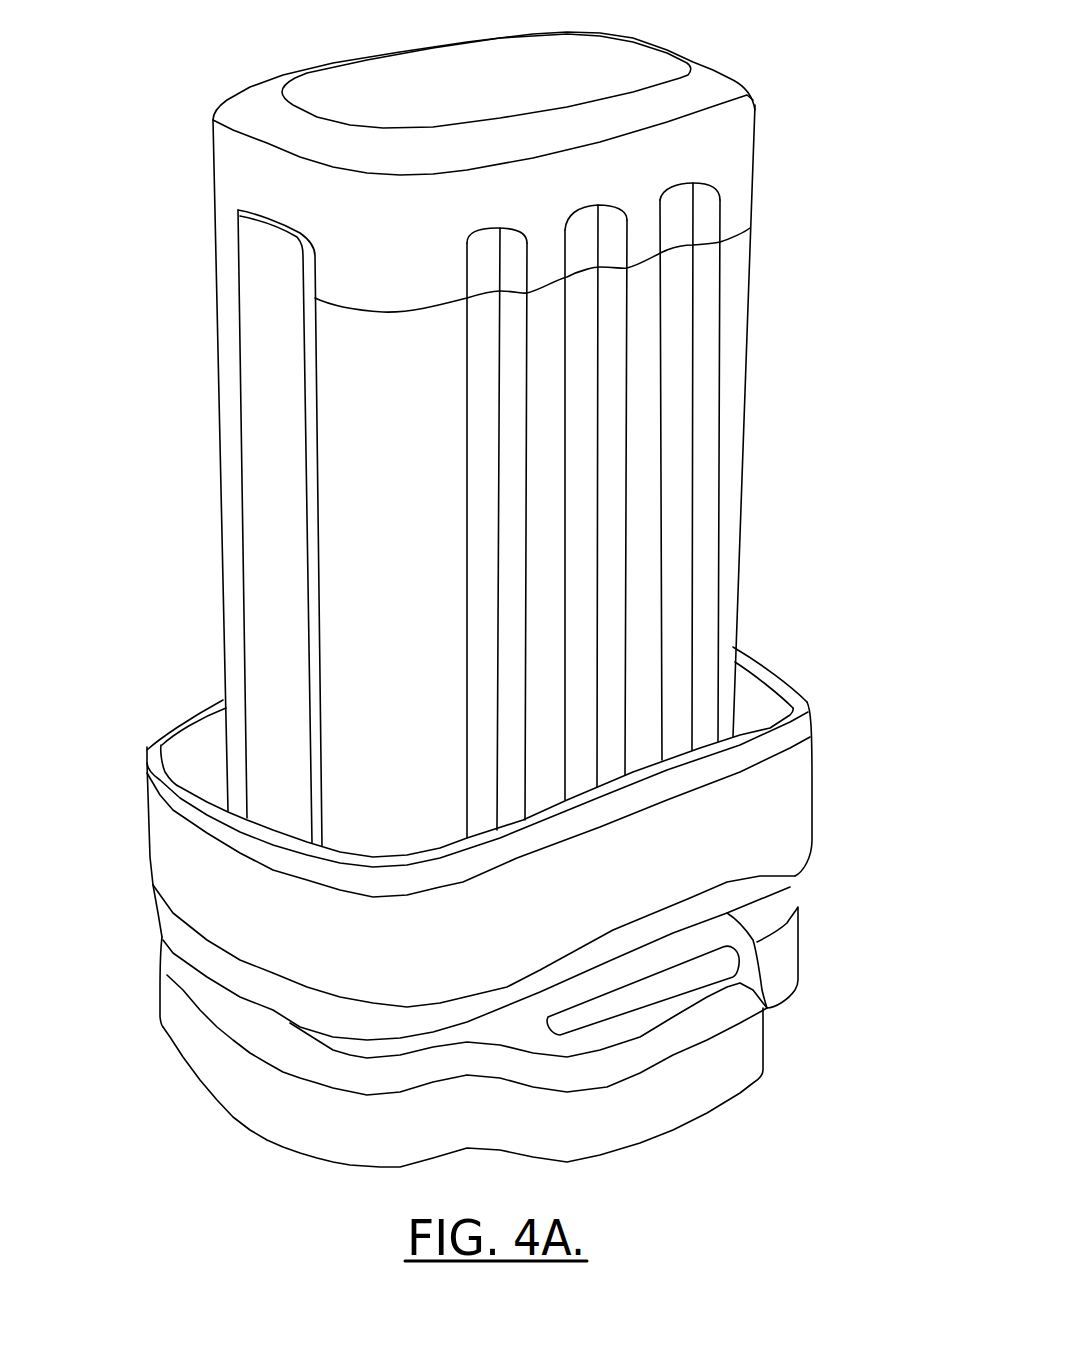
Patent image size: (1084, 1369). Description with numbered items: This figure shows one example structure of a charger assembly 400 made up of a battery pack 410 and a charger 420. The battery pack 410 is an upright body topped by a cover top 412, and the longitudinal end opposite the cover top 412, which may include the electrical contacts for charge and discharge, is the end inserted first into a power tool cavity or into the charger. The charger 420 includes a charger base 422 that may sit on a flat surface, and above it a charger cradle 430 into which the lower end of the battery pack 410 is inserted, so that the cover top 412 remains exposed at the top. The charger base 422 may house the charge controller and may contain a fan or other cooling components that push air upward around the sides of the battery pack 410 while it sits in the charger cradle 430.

The charger assembly 400 is at (174, 39).
The battery pack 410 is at (423, 610).
The cover top 412 is at (713, 70).
The charger 420 is at (152, 1139).
The charger base 422 is at (697, 1060).
The charger cradle 430 is at (787, 788).